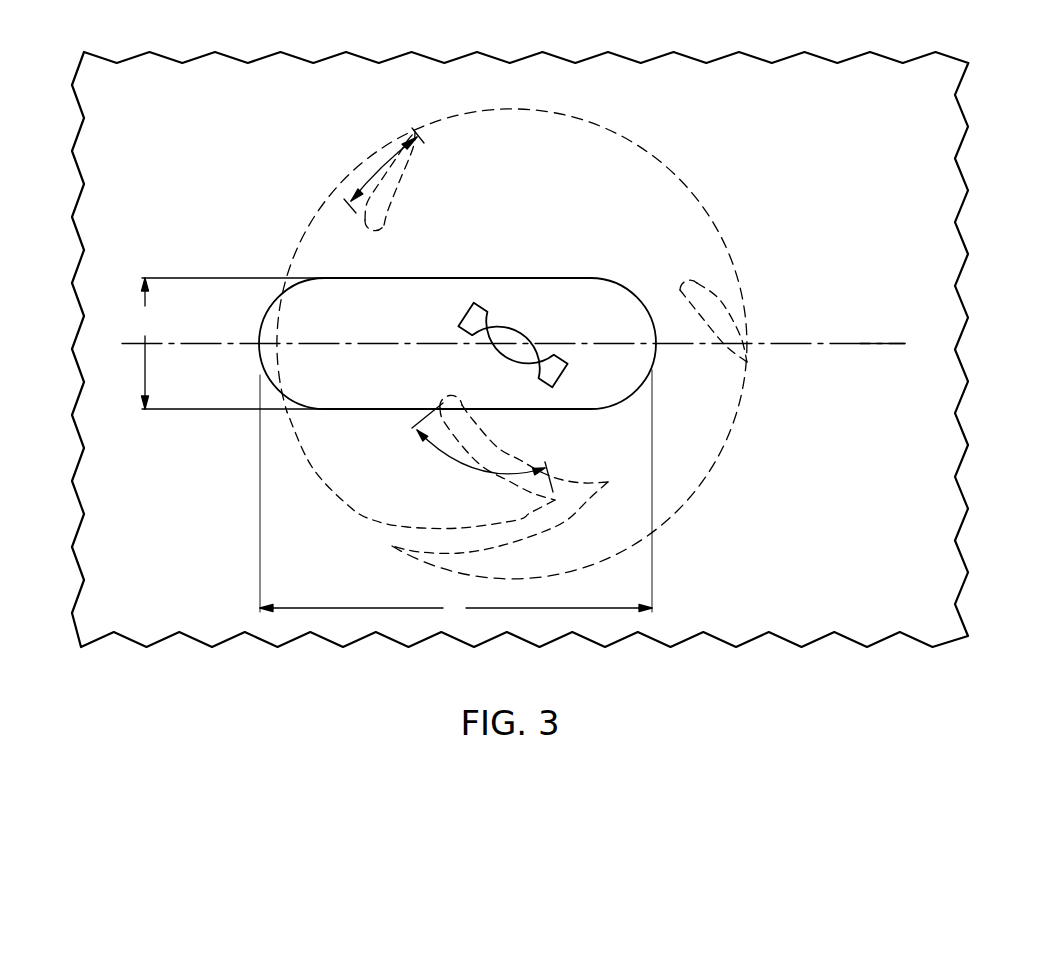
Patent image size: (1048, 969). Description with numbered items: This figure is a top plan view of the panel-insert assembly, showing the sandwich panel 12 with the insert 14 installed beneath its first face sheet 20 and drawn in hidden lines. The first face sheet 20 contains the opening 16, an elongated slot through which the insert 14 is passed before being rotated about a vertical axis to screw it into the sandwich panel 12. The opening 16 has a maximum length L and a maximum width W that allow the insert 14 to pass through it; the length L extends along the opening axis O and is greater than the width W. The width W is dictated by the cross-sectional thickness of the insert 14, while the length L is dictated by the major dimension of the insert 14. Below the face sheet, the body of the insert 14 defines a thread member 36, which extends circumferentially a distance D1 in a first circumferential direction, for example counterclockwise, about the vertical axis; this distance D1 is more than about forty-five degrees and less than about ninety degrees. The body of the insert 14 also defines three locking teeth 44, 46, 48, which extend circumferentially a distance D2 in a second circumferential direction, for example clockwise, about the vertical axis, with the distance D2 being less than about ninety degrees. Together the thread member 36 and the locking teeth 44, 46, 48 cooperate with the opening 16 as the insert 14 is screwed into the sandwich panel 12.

The sandwich panel 12 is at (964, 238).
The insert 14 is at (697, 205).
The opening 16 is at (528, 279).
The first face sheet 20 is at (822, 569).
The thread member 36 is at (437, 508).
The locking tooth 44 is at (572, 549).
The locking tooth 46 is at (731, 300).
The locking tooth 48 is at (366, 172).
The circumferential distance D1 is at (462, 461).
The circumferential distance D2 is at (380, 175).
The maximum width W is at (228, 343).
The maximum length L is at (456, 496).
The opening axis O is at (880, 343).